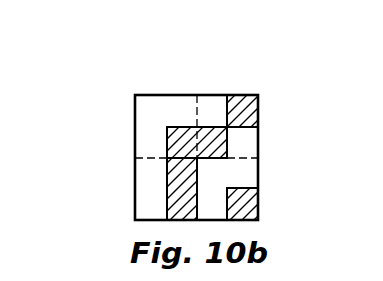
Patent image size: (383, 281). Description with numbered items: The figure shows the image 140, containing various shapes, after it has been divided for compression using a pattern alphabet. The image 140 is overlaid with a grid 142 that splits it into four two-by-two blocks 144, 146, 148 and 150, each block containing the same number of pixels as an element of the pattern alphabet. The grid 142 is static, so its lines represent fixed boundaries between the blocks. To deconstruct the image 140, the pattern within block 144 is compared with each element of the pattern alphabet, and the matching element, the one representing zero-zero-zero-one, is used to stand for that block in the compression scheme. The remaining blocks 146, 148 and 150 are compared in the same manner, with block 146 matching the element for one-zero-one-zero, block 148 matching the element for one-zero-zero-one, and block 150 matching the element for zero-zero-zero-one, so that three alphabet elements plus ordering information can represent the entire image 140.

The image 140 is at (278, 59).
The grid 142 is at (158, 157).
The block 144 is at (161, 88).
The block 146 is at (216, 88).
The block 148 is at (129, 190).
The block 150 is at (268, 175).